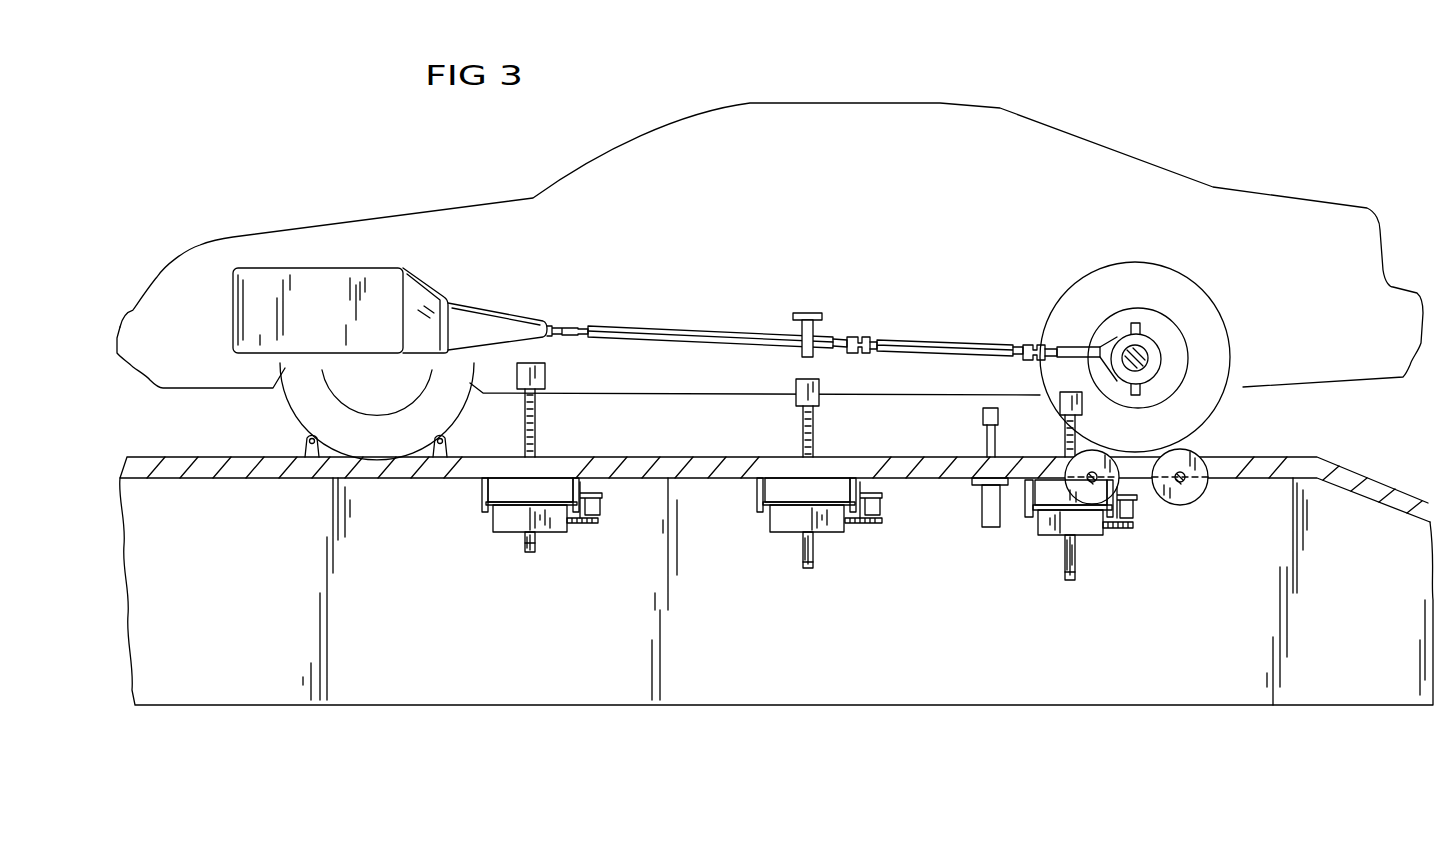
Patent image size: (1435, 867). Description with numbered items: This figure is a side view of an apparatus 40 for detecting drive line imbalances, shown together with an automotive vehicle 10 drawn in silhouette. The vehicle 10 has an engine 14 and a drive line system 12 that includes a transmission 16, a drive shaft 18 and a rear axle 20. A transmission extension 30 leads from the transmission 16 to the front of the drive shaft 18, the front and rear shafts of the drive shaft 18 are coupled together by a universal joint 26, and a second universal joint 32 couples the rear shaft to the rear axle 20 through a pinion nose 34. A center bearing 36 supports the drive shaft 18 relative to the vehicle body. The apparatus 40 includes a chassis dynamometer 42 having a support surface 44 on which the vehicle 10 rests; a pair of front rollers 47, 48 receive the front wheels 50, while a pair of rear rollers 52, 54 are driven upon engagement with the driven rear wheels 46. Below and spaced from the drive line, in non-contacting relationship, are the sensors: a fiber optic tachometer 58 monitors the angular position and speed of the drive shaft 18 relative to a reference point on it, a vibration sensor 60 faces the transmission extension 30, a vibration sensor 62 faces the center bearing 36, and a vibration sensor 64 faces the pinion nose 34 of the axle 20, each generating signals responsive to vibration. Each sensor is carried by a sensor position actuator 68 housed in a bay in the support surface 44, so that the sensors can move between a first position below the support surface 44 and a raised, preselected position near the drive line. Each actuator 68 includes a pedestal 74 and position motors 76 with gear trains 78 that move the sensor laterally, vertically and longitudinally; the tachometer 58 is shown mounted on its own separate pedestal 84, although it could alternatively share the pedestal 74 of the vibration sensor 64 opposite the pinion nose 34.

The automotive vehicle 10 is at (1150, 152).
The drive line system 12 is at (776, 288).
The engine 14 is at (263, 277).
The transmission 16 is at (437, 303).
The drive shaft 18 is at (718, 330).
The rear axle 20 is at (1157, 348).
The universal joint 26 is at (865, 340).
The transmission extension 30 is at (505, 325).
The universal joint 32 is at (1033, 345).
The pinion nose 34 is at (1085, 347).
The center bearing 36 is at (820, 327).
The apparatus 40 is at (472, 665).
The chassis dynamometer 42 is at (1212, 496).
The support surface 44 is at (1290, 457).
The rear wheels 46 is at (1218, 353).
The front roller 47 is at (305, 440).
The front roller 48 is at (447, 440).
The front wheels 50 is at (343, 434).
The rear roller 52 is at (1120, 463).
The rear roller 54 is at (1200, 460).
The fiber optic tachometer 58 is at (983, 410).
The vibration sensor 60 is at (545, 377).
The vibration sensor 62 is at (796, 390).
The vibration sensor 64 is at (1060, 402).
The sensor position actuator 68 is at (610, 524).
The pedestal 74 is at (540, 408).
The lateral position motor 76 is at (603, 508).
The gear train 78 is at (587, 535).
The pedestal 84 is at (986, 455).